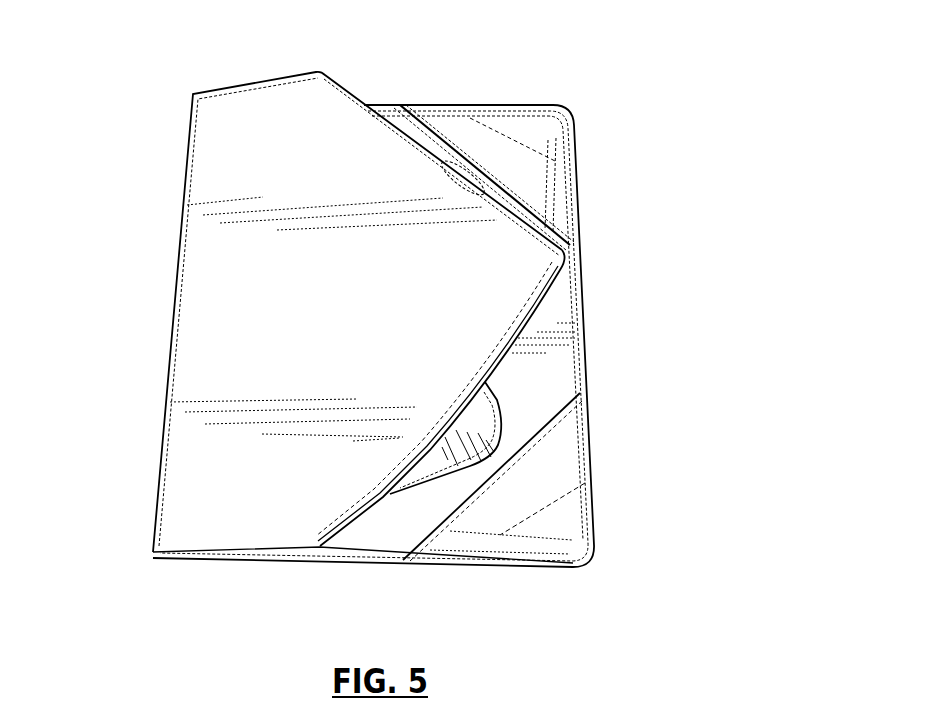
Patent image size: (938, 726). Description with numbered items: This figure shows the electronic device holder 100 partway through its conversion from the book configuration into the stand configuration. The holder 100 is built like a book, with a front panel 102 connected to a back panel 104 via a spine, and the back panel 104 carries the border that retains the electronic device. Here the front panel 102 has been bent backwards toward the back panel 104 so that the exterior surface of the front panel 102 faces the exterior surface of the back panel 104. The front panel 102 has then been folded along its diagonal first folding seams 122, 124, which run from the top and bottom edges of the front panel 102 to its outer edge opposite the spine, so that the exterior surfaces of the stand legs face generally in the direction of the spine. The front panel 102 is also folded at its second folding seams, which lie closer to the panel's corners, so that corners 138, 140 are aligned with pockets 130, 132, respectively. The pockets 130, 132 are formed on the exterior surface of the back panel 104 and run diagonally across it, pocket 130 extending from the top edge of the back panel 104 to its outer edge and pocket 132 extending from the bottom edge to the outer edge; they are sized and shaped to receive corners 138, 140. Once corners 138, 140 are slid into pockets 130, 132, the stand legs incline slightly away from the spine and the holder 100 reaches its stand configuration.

The electronic device holder 100 is at (490, 80).
The front panel 102 is at (210, 440).
The back panel 104 is at (552, 367).
The first folding seam 122 is at (333, 82).
The first folding seam 124 is at (353, 507).
The pocket 130 is at (555, 195).
The pocket 132 is at (548, 506).
The corner 138 is at (455, 162).
The corner 140 is at (456, 460).